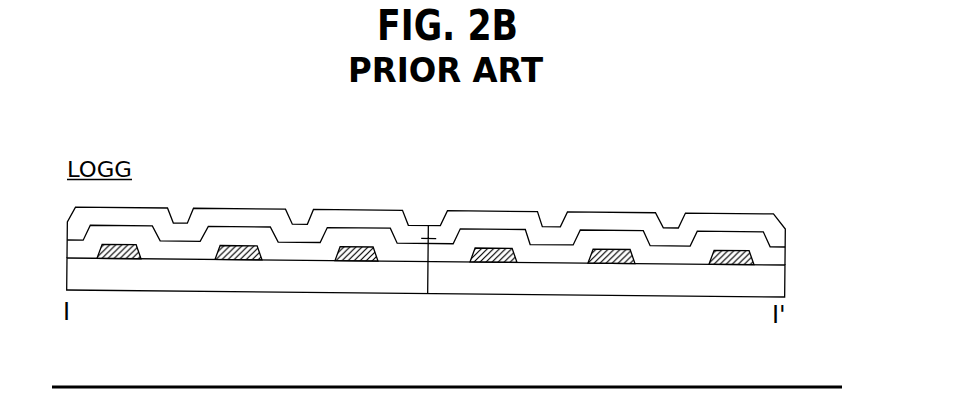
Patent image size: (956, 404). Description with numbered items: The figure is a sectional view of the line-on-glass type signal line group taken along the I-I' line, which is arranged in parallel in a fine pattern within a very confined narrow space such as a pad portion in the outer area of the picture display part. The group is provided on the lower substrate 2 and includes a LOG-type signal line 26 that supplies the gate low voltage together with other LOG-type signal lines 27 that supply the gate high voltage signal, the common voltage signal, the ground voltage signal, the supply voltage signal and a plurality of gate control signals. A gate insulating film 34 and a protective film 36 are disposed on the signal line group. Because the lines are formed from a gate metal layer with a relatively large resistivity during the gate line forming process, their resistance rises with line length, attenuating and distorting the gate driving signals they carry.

The lower substrate 2 is at (787, 290).
The LOG-type signal line 26 is at (118, 255).
The LOG-type signal lines 27 is at (728, 266).
The gate insulating film 34 is at (787, 251).
The protective film 36 is at (787, 231).